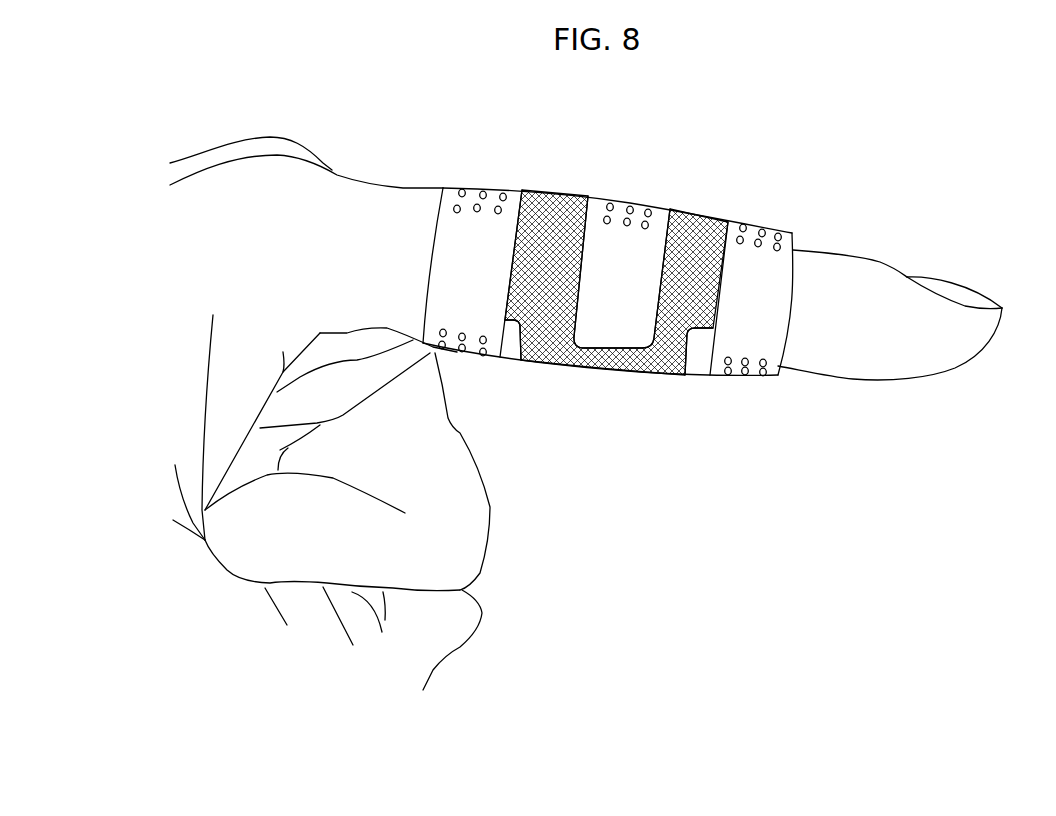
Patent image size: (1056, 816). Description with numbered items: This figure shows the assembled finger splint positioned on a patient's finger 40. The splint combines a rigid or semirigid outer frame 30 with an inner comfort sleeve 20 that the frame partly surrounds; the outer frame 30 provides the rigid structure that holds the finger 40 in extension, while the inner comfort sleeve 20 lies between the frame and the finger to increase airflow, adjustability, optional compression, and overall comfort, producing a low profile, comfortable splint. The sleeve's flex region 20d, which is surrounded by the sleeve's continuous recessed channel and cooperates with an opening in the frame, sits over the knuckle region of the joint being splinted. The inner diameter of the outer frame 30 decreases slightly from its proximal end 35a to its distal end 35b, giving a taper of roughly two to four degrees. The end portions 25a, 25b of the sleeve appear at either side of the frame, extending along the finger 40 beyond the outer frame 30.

The inner comfort sleeve 20 is at (470, 245).
The flex region 20d is at (639, 265).
The first adhesive end 25a is at (430, 233).
The second adhesive end 25b is at (795, 297).
The outer frame 30 is at (554, 291).
The proximal end 35a is at (521, 360).
The distal end 35b is at (685, 375).
The patient's finger 40 is at (861, 298).